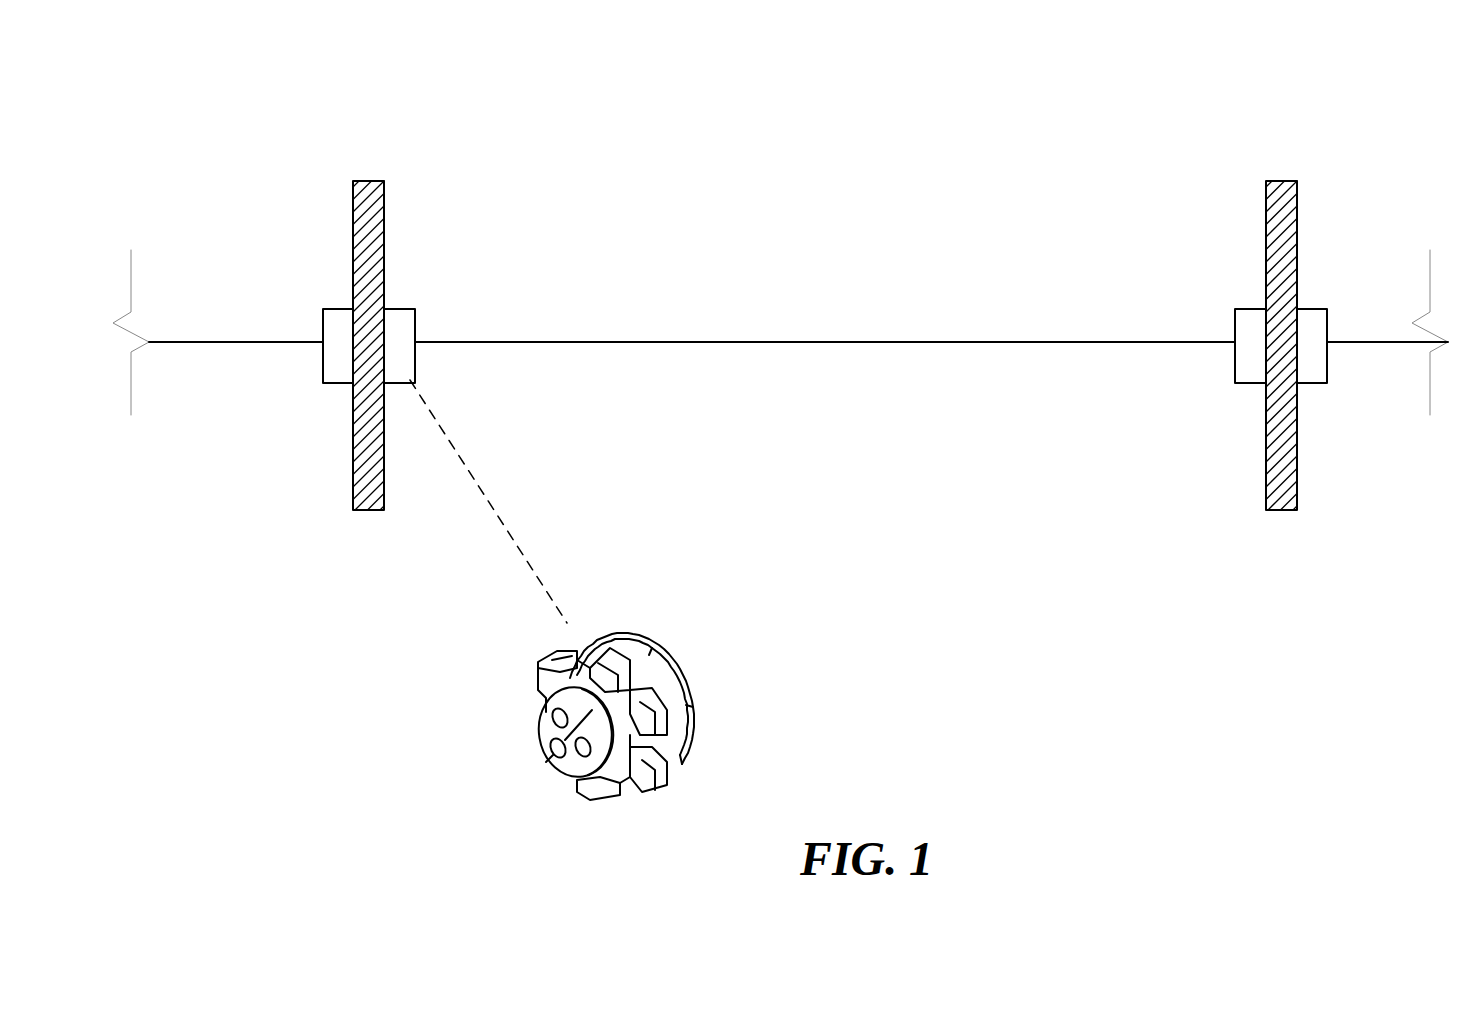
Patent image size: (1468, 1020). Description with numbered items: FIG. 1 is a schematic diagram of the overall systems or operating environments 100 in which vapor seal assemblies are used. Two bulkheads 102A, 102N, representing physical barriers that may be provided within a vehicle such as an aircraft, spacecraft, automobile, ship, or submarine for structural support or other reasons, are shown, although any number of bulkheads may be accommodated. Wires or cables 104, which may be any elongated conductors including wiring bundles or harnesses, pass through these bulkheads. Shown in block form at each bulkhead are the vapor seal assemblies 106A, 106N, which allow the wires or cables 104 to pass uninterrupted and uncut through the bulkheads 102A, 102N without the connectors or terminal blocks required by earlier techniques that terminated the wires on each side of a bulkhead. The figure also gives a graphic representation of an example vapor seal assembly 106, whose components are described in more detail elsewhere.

The overall systems or operating environments 100 is at (889, 61).
The bulkhead 102A is at (429, 319).
The bulkhead 102N is at (1334, 310).
The wires or cables 104 is at (780, 332).
The vapor seal assembly 106 is at (569, 590).
The vapor seal assembly 106A is at (424, 311).
The vapor seal assembly 106N is at (1224, 309).